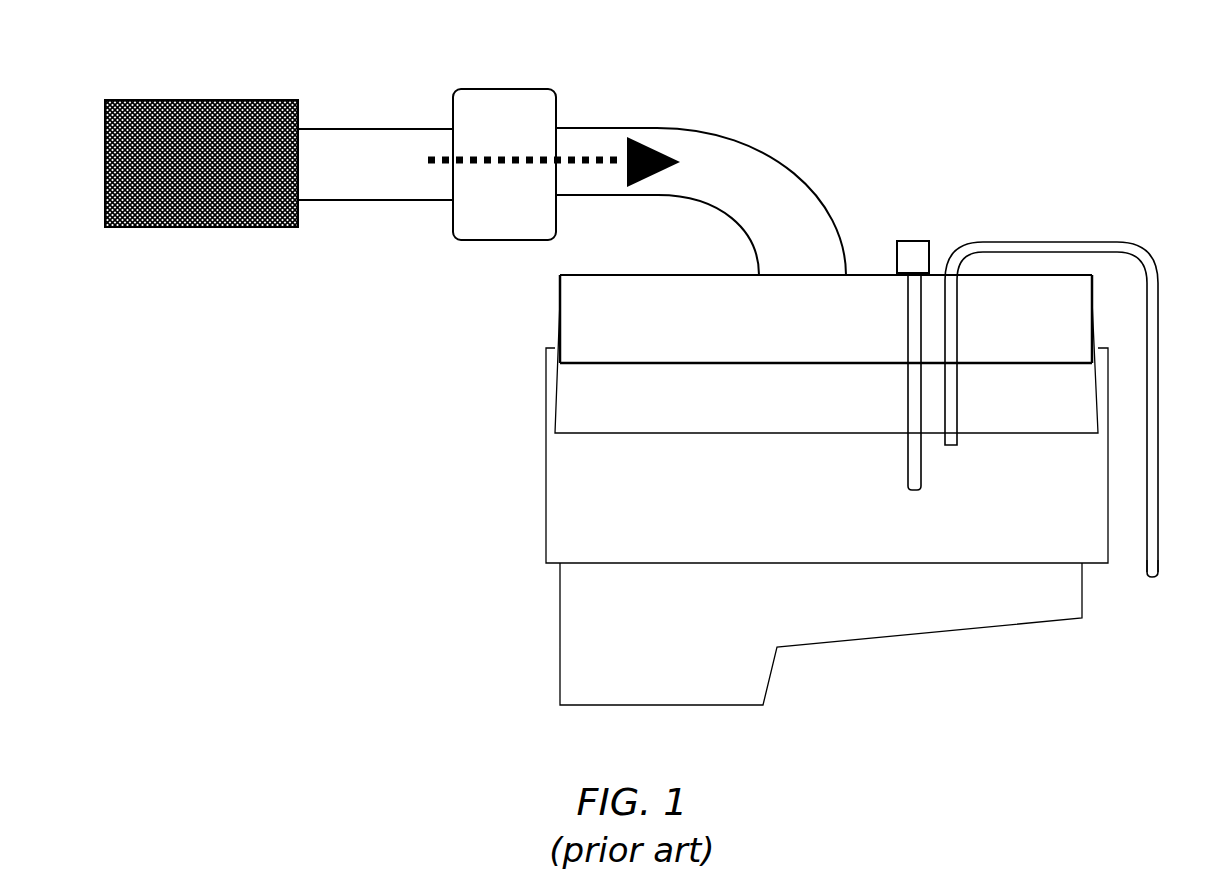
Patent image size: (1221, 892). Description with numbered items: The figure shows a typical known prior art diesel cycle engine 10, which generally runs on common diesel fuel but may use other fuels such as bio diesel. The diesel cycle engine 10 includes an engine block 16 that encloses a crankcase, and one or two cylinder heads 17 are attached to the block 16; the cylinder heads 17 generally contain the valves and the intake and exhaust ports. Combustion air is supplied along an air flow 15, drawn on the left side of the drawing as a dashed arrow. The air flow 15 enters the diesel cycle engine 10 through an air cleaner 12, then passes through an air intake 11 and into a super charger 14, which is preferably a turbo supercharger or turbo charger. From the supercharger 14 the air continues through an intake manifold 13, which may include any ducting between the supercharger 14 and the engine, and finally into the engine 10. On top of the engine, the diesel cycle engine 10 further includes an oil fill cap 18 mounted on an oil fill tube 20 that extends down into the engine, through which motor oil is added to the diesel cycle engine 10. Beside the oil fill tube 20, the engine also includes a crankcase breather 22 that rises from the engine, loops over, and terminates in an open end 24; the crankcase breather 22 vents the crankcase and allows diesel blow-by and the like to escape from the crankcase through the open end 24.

The diesel cycle engine 10 is at (928, 114).
The air intake 11 is at (392, 158).
The air cleaner 12 is at (207, 227).
The intake manifold 13 is at (733, 178).
The super charger 14 is at (488, 225).
The air flow 15 is at (575, 160).
The engine block 16 is at (809, 512).
The cylinder head 17 is at (702, 412).
The oil fill cap 18 is at (908, 255).
The oil fill tube 20 is at (912, 345).
The crankcase breather 22 is at (1030, 250).
The open end 24 is at (1155, 572).